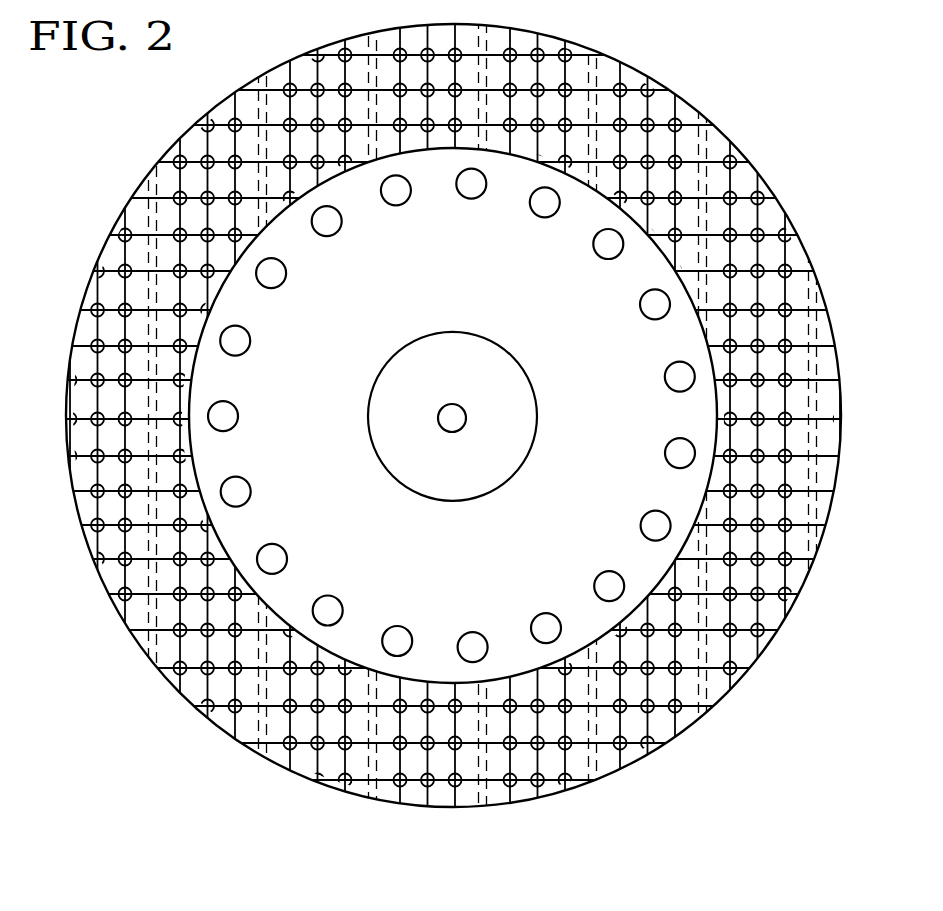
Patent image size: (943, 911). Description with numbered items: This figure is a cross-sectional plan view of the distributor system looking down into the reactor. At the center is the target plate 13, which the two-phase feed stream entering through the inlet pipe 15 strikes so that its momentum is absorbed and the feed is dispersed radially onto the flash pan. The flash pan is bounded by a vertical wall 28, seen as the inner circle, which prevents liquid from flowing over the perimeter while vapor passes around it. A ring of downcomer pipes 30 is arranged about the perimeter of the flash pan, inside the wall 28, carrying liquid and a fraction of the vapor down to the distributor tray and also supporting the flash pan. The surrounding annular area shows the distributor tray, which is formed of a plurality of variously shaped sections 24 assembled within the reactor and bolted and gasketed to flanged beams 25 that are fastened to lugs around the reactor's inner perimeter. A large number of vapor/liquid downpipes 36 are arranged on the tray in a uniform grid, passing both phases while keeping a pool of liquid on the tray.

The target plate 13 is at (478, 334).
The inlet pipe 15 is at (464, 410).
The sections 24 is at (335, 723).
The flanged beams 25 is at (227, 712).
The vertical wall 28 is at (190, 388).
The downcomer pipes 30 is at (342, 598).
The vapor/liquid downpipes 36 is at (653, 708).